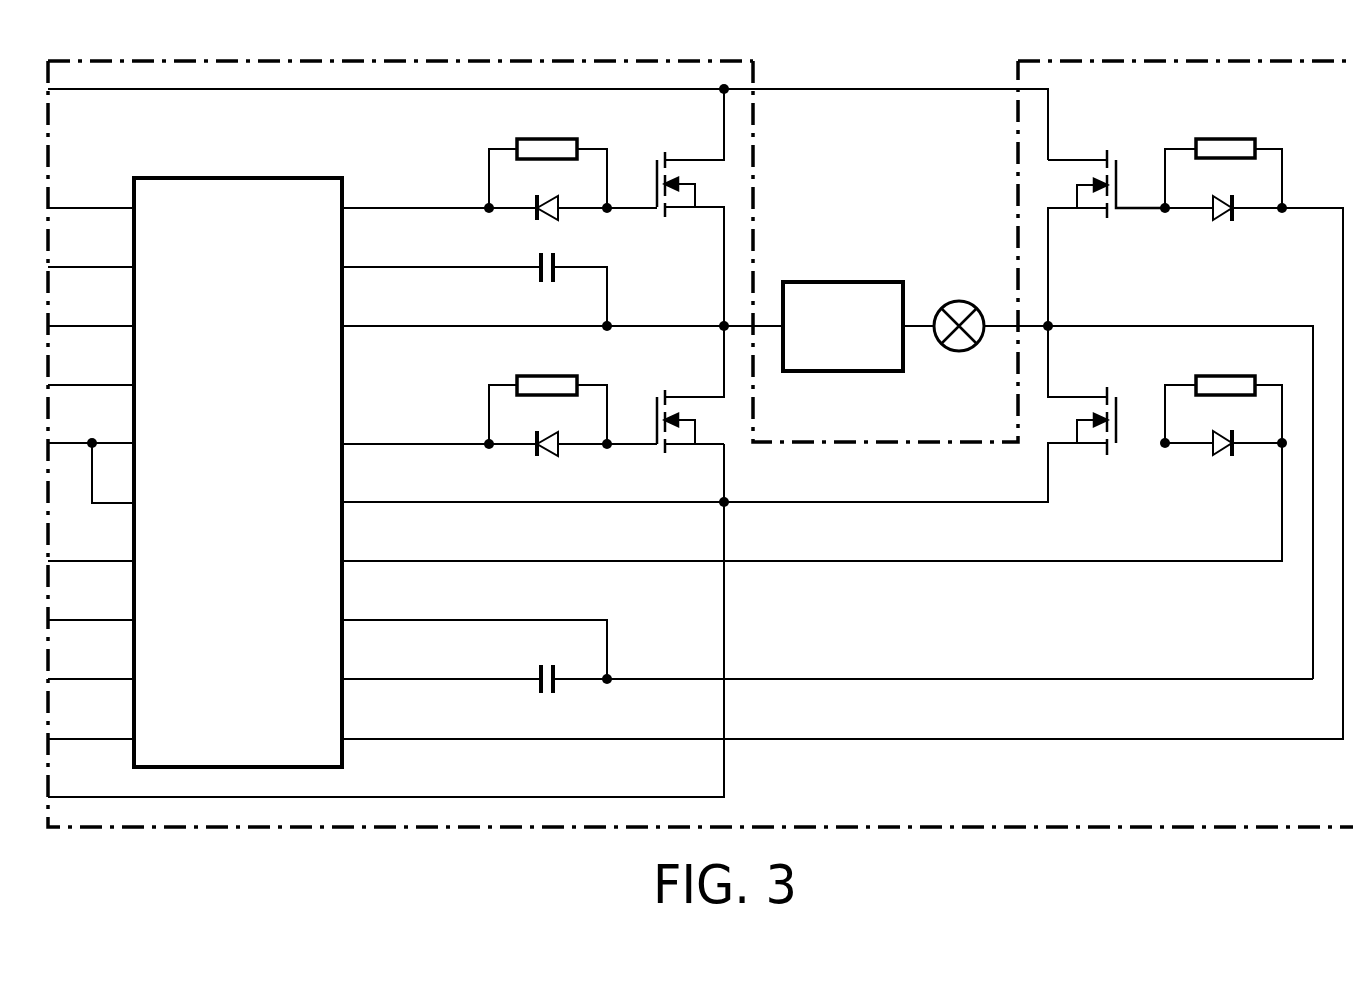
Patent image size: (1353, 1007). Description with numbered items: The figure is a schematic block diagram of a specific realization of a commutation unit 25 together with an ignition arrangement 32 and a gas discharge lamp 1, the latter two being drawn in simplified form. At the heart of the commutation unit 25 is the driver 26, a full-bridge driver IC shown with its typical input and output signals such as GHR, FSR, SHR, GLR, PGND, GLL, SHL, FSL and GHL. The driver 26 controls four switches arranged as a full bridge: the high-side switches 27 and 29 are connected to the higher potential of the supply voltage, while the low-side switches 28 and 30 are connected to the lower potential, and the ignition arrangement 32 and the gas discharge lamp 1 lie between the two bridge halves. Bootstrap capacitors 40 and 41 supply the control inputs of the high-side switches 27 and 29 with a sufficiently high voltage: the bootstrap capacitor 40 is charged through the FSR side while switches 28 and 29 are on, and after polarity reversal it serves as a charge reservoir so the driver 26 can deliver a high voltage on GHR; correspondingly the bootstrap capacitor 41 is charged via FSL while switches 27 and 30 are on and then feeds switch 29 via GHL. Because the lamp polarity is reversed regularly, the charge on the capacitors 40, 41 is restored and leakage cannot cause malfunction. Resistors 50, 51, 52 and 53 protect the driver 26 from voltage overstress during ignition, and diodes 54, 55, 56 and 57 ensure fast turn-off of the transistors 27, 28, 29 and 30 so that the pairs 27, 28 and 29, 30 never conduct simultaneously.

The gas discharge lamp 1 is at (960, 307).
The commutation unit 25 is at (262, 61).
The driver 26 is at (250, 200).
The high-side switch 27 is at (657, 172).
The low-side switch 28 is at (657, 410).
The high-side switch 29 is at (1116, 172).
The low-side switch 30 is at (1116, 408).
The ignition arrangement 32 is at (852, 296).
The bootstrap capacitor 40 is at (541, 275).
The bootstrap capacitor 41 is at (541, 686).
The resistor 50 is at (530, 139).
The resistor 51 is at (530, 376).
The resistor 52 is at (1212, 139).
The resistor 53 is at (1212, 376).
The diode 54 is at (558, 214).
The diode 55 is at (558, 451).
The diode 56 is at (1215, 215).
The diode 57 is at (1215, 450).